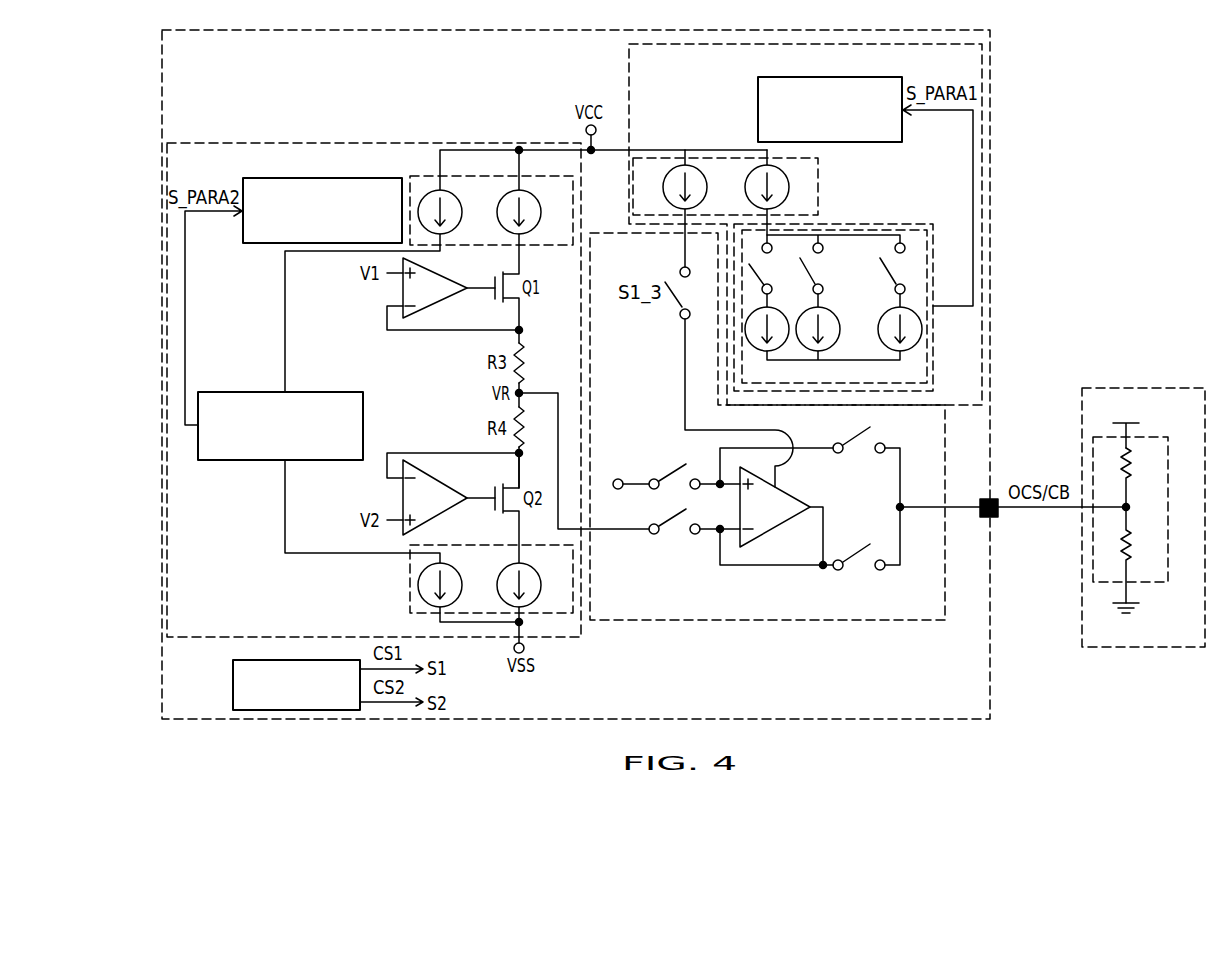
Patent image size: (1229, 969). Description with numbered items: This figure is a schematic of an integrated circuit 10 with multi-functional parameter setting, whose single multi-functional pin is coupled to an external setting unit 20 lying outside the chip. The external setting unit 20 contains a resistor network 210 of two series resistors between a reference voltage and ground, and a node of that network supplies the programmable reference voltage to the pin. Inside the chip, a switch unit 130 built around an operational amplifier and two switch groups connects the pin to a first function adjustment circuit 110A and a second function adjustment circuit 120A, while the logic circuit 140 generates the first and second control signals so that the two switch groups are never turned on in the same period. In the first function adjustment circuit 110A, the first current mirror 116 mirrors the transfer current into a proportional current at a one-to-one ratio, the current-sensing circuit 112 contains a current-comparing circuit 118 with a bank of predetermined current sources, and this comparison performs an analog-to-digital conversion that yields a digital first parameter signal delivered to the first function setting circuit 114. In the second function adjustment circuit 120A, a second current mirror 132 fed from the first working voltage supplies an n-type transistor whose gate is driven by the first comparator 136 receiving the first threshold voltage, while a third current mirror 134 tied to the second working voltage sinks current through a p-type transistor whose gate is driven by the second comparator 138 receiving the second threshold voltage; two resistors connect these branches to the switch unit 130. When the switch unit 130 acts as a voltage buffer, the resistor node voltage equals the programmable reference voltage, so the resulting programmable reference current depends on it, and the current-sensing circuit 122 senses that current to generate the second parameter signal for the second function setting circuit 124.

The integrated circuit 10 is at (990, 80).
The external setting unit 20 is at (1152, 388).
The first function adjustment circuit 110A is at (628, 97).
The second function adjustment circuit 120A is at (248, 143).
The current-sensing circuit 112 is at (933, 362).
The first function setting circuit 114 is at (867, 77).
The first current mirror 116 is at (818, 165).
The current-comparing circuit 118 is at (927, 327).
The current-sensing circuit 122 is at (312, 392).
The second function setting circuit 124 is at (342, 178).
The switch unit 130 is at (945, 442).
The second current mirror 132 is at (573, 192).
The third current mirror 134 is at (410, 594).
The first comparator 136 is at (437, 305).
The second comparator 138 is at (437, 481).
The logic circuit 140 is at (233, 673).
The resistor network 210 is at (1168, 457).